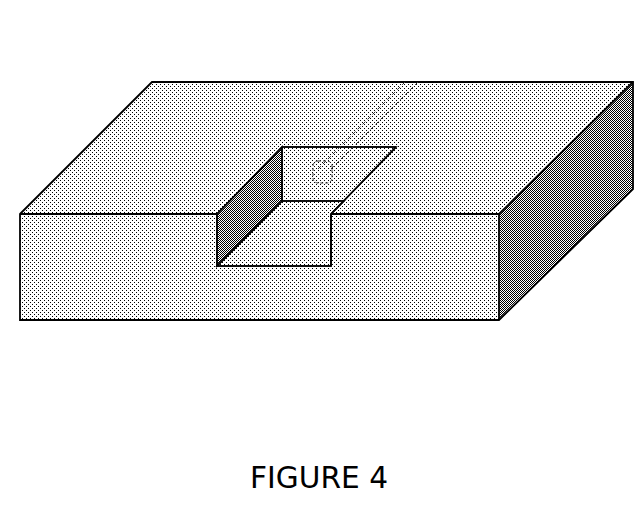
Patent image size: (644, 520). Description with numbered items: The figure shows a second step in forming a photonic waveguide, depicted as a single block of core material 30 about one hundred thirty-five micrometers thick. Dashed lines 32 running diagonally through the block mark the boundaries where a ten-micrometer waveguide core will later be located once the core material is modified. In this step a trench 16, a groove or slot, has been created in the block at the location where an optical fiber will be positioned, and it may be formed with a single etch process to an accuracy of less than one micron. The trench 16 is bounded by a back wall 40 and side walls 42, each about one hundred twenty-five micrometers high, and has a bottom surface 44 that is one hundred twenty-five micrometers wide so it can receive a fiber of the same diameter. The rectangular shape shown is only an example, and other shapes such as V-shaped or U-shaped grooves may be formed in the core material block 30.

The core material block 30 is at (217, 98).
The waveguide core boundaries 32 is at (415, 73).
The back wall 40 is at (300, 165).
The side walls 42 is at (228, 228).
The bottom surface 44 is at (306, 240).
The trench 16 is at (290, 250).